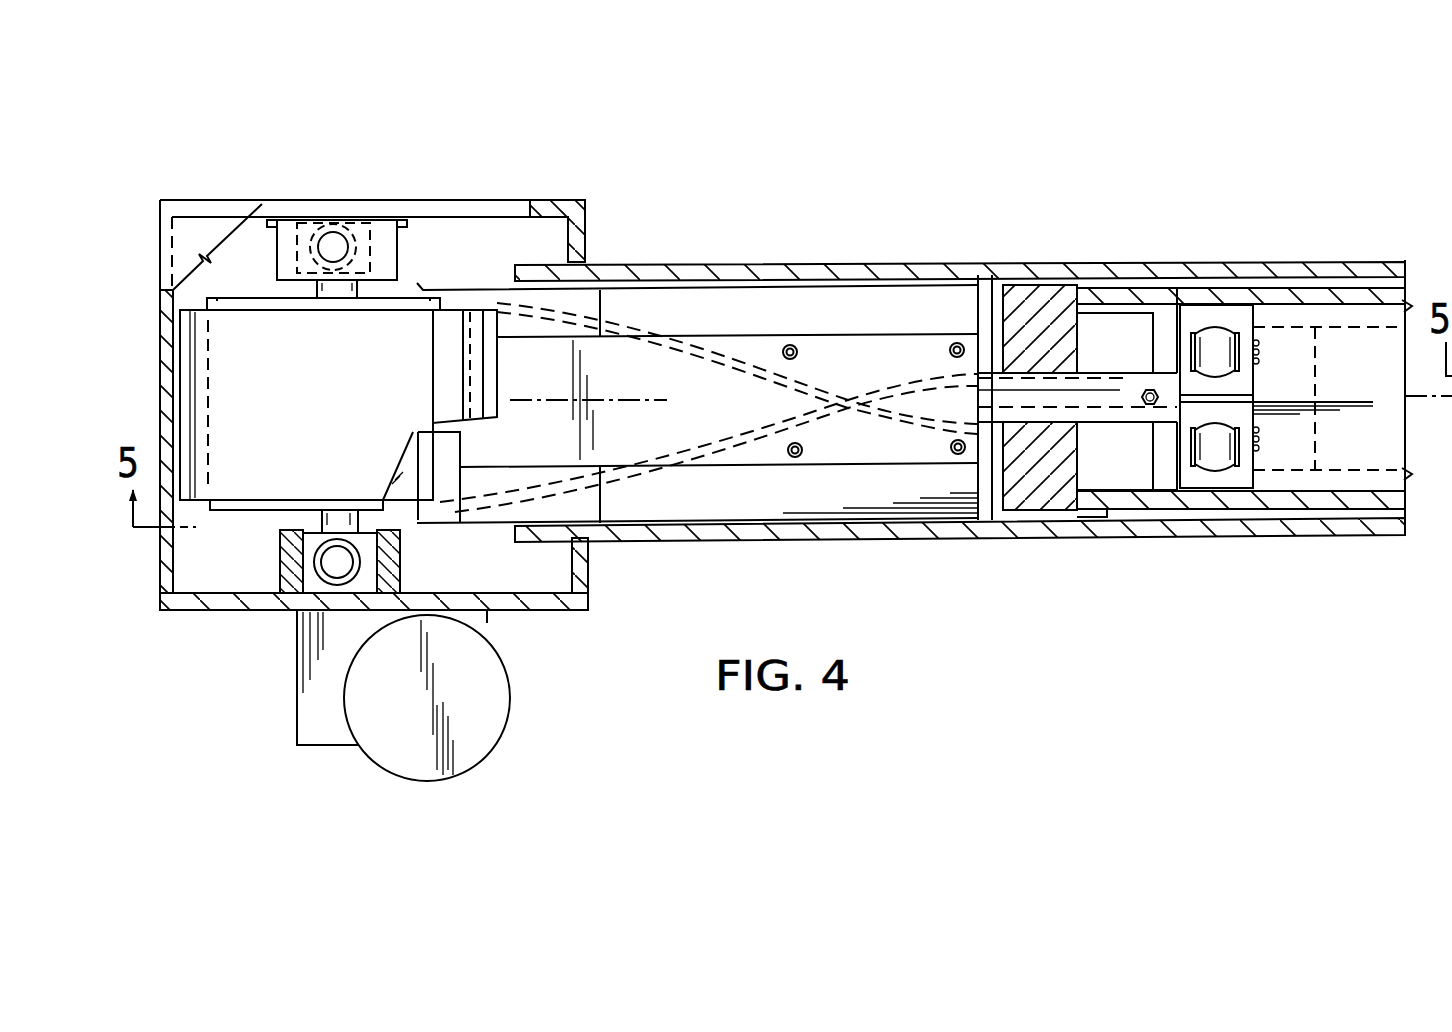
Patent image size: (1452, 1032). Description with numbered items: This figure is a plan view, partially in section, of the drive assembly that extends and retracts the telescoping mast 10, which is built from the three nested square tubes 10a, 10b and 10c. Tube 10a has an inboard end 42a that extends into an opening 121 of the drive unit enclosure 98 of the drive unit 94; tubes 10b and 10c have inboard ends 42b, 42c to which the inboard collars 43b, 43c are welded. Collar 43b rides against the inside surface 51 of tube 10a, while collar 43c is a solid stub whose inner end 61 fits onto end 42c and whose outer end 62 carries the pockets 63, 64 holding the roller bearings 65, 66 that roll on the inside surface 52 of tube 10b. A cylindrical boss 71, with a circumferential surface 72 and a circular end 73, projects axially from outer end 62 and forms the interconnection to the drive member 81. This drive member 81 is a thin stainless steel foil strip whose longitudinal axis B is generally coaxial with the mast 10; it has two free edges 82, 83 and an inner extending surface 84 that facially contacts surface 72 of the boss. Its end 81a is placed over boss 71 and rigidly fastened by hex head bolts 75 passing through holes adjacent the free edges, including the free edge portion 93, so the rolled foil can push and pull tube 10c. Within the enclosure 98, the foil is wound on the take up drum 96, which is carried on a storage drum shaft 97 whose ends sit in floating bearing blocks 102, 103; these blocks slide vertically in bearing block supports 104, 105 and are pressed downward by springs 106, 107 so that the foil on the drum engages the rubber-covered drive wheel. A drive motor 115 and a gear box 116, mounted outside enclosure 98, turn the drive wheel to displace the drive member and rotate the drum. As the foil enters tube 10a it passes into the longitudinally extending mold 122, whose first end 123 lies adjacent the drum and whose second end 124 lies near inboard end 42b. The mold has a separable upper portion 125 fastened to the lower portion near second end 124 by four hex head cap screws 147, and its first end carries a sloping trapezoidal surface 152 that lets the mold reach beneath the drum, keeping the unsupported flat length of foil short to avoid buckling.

The mast 10 is at (1345, 553).
The tube 10a is at (776, 265).
The tube 10b is at (1385, 505).
The tube 10c is at (1371, 317).
The inboard end 42a is at (606, 265).
The inboard end 42b is at (1092, 288).
The inboard end 42c is at (1268, 317).
The inboard collar 43b is at (1037, 292).
The inboard collar 43c is at (1196, 327).
The inside surface 51 is at (985, 290).
The inside surface 52 is at (1367, 485).
The inner end 61 is at (1275, 465).
The outer end 62 is at (1172, 305).
The pocket 63 is at (1240, 358).
The pocket 64 is at (1240, 433).
The roller bearing 65 is at (1219, 330).
The roller bearing 66 is at (1222, 465).
The cylindrical boss 71 is at (1168, 428).
The circumferential surface 72 is at (1123, 512).
The circular end 73 is at (1120, 394).
The hex head bolt 75 is at (1143, 404).
The drive member 81 is at (182, 332).
The end 81a is at (1163, 375).
The free edge 82 is at (498, 290).
The free edge 83 is at (408, 502).
The inner extending surface 84 is at (400, 474).
The free edge portion 93 is at (1022, 385).
The drive unit 94 is at (195, 184).
The take up drum 96 is at (250, 303).
The storage drum shaft 97 is at (320, 518).
The drive unit enclosure 98 is at (467, 200).
The floating bearing block 102 is at (368, 222).
The floating bearing block 103 is at (308, 578).
The bearing block support 104 is at (290, 230).
The bearing block support 105 is at (284, 530).
The spring 106 is at (334, 218).
The spring 107 is at (333, 582).
The drive motor 115 is at (487, 714).
The gear box 116 is at (330, 740).
The opening 121 is at (597, 529).
The mold 122 is at (700, 266).
The first end 123 is at (412, 437).
The second end 124 is at (973, 520).
The upper portion 125 is at (687, 430).
The hex head cap screw 147 is at (954, 343).
The sloping trapezoidal surface 152 is at (441, 468).
The axis B is at (538, 398).